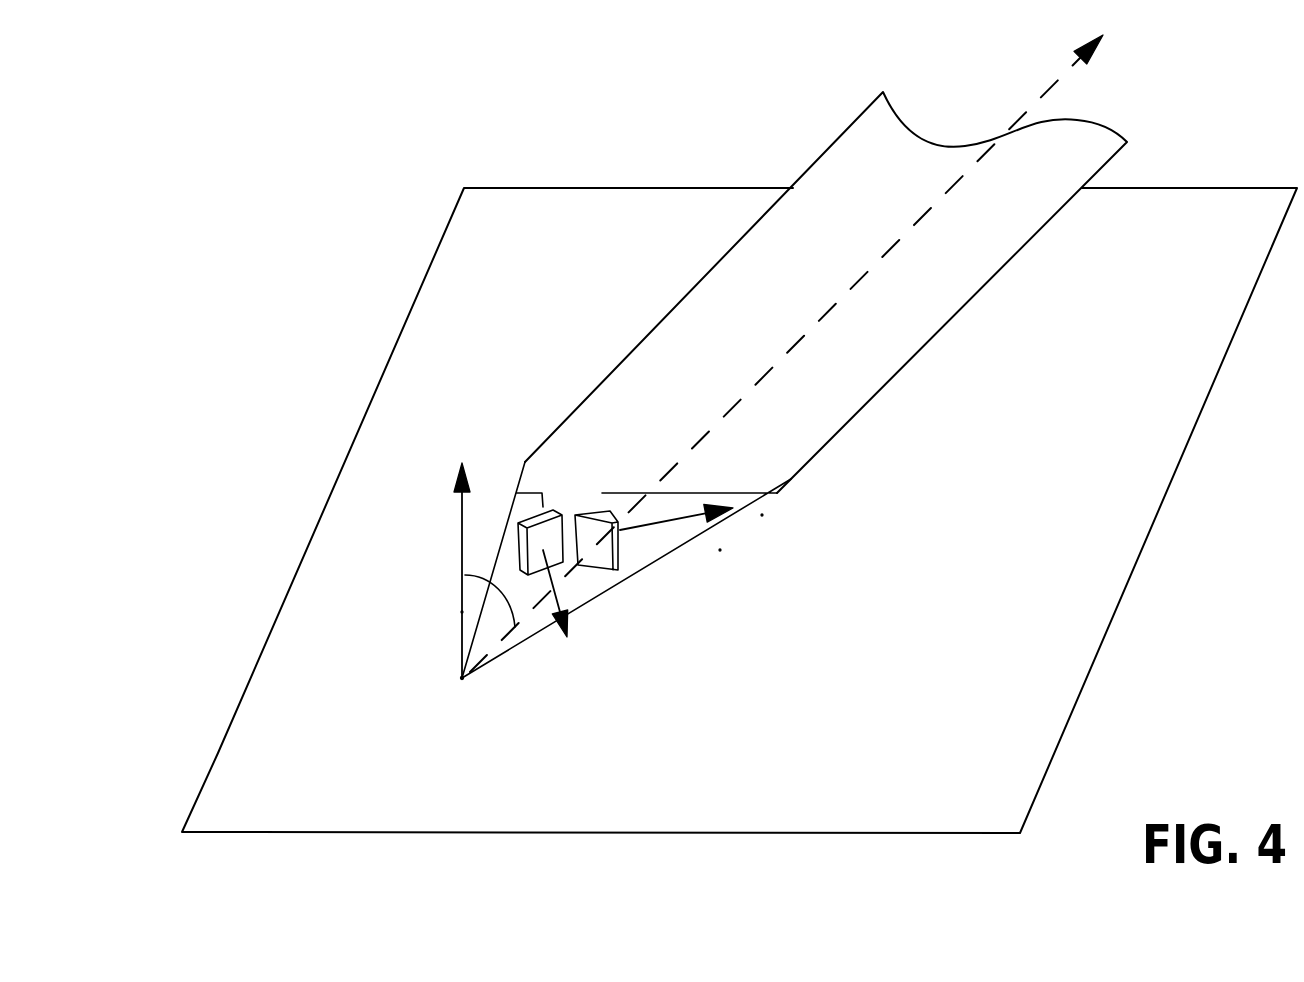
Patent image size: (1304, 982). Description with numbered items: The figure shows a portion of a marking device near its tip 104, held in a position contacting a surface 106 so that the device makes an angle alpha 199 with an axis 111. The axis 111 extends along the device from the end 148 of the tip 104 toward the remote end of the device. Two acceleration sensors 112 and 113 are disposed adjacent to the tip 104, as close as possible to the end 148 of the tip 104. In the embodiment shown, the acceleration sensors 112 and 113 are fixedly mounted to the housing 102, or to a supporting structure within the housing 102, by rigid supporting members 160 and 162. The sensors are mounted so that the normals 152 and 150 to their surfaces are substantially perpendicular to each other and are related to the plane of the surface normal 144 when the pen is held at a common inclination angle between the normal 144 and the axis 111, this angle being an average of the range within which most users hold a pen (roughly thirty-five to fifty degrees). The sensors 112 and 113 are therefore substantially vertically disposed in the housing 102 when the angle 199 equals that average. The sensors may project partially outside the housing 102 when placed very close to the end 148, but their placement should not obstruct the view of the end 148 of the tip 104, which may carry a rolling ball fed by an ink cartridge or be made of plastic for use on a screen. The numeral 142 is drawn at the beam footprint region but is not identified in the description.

The housing 102 is at (978, 292).
The tip 104 is at (550, 647).
The surface 106 is at (860, 833).
The axis 111 is at (763, 377).
The acceleration sensor 112 is at (557, 505).
The acceleration sensor 113 is at (625, 575).
The footprint edge 142 is at (762, 515).
The surface normal 144 is at (458, 502).
The end of tip 148 is at (462, 678).
The normal 150 is at (720, 550).
The normal 152 is at (550, 597).
The rigid supporting member 160 is at (550, 484).
The rigid supporting member 162 is at (763, 492).
The angle alpha 199 is at (460, 612).